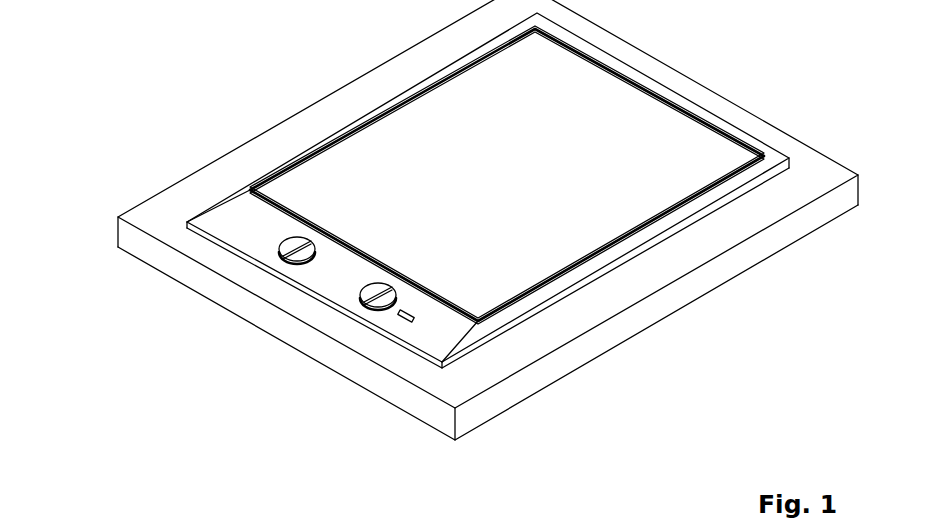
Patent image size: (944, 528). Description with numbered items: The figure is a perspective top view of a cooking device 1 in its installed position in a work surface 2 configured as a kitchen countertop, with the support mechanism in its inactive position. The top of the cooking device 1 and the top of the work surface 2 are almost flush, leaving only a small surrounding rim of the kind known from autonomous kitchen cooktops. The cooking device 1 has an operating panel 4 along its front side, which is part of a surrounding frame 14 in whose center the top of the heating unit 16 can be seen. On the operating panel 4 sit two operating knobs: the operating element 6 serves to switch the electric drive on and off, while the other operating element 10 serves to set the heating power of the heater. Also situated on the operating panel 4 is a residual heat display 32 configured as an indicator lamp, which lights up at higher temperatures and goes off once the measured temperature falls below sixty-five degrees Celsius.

The cooking device 1 is at (431, 389).
The work surface 2 is at (715, 233).
The operating panel 4 is at (228, 218).
The operating element 6 is at (290, 258).
The operating element 10 is at (370, 304).
The surrounding frame 14 is at (610, 255).
The heating unit 16 is at (532, 217).
The residual heat display 32 is at (407, 318).